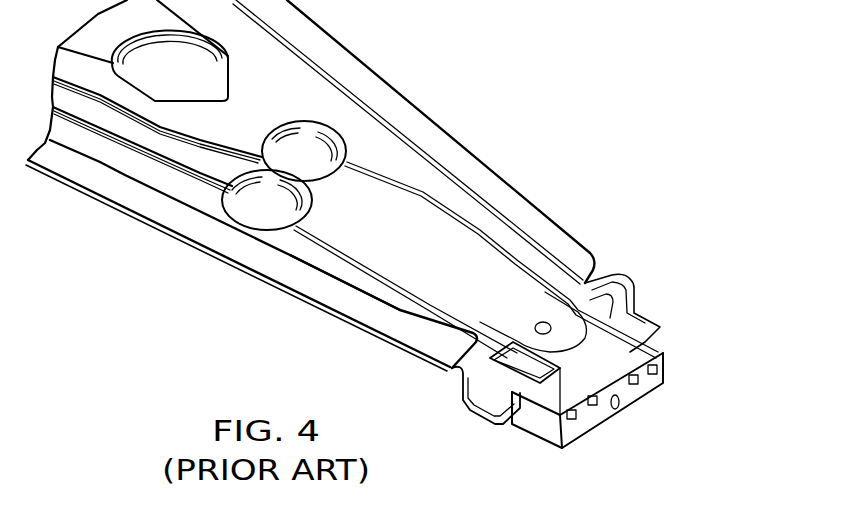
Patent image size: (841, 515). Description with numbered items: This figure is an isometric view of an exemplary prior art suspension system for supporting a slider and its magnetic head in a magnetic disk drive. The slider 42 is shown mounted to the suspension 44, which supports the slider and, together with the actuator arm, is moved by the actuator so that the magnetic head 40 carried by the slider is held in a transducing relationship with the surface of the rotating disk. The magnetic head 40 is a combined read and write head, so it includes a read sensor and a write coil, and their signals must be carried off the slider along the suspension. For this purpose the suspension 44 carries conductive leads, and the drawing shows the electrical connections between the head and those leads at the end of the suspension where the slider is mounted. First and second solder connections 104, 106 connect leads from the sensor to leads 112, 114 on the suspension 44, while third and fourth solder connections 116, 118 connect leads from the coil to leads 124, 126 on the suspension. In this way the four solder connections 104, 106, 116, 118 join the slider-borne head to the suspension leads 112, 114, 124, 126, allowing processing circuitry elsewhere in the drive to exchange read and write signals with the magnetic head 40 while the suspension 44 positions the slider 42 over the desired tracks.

The magnetic head 40 is at (616, 421).
The slider 42 is at (500, 433).
The suspension 44 is at (452, 130).
The first solder connection 104 is at (565, 430).
The second solder connection 106 is at (666, 362).
The lead 112 is at (340, 250).
The lead 114 is at (500, 242).
The third solder connection 116 is at (592, 407).
The fourth solder connection 118 is at (637, 388).
The lead 124 is at (358, 253).
The lead 126 is at (424, 192).